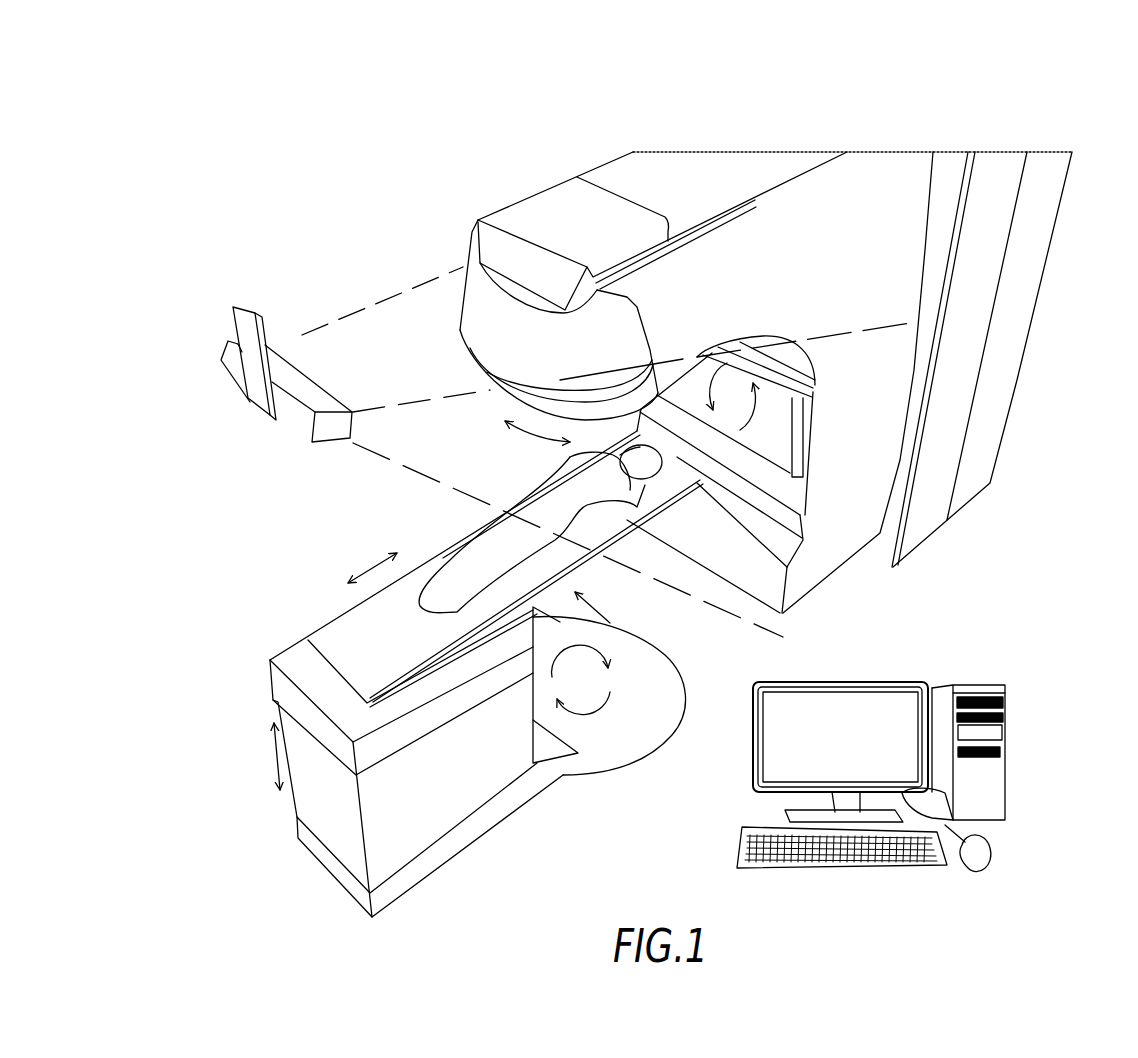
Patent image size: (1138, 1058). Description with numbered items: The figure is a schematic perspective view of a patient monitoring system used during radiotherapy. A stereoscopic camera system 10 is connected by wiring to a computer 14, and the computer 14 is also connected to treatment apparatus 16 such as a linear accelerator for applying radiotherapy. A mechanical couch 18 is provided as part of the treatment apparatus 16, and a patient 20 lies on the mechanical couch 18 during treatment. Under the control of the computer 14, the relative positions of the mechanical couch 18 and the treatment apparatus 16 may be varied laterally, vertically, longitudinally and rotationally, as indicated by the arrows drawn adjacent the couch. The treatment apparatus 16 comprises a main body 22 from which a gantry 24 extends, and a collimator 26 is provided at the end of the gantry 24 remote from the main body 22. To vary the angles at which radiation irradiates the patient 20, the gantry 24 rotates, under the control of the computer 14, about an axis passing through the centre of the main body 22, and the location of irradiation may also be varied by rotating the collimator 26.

The stereoscopic camera system 10 is at (245, 303).
The computer 14 is at (891, 681).
The treatment apparatus 16 is at (702, 180).
The mechanical couch 18 is at (350, 850).
The patient 20 is at (565, 494).
The main body 22 is at (1018, 390).
The gantry 24 is at (790, 263).
The collimator 26 is at (570, 385).